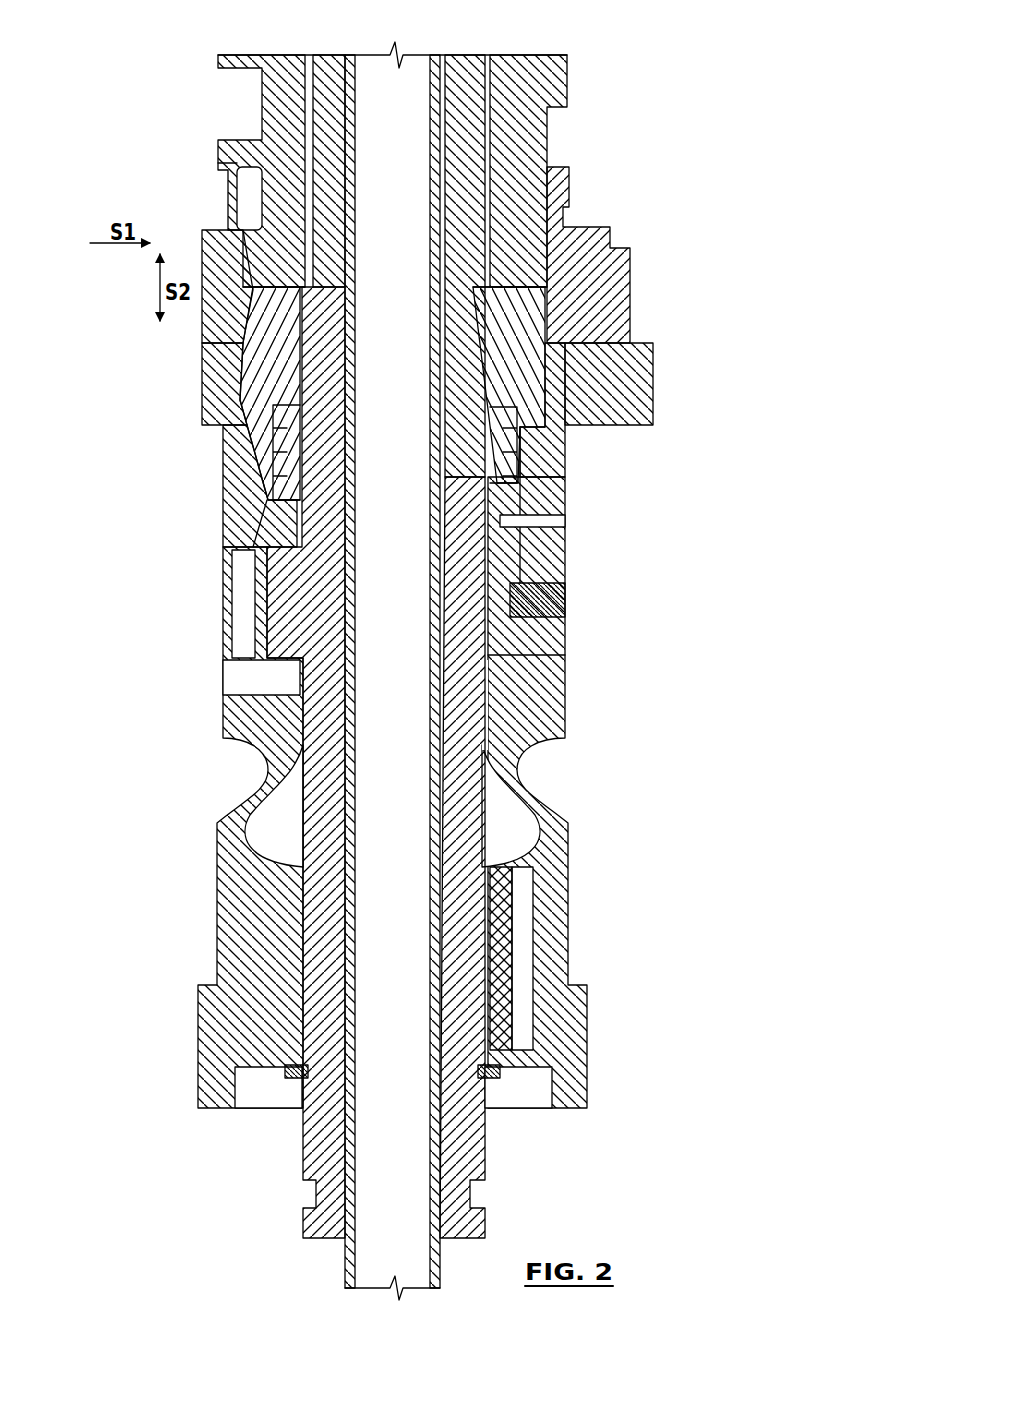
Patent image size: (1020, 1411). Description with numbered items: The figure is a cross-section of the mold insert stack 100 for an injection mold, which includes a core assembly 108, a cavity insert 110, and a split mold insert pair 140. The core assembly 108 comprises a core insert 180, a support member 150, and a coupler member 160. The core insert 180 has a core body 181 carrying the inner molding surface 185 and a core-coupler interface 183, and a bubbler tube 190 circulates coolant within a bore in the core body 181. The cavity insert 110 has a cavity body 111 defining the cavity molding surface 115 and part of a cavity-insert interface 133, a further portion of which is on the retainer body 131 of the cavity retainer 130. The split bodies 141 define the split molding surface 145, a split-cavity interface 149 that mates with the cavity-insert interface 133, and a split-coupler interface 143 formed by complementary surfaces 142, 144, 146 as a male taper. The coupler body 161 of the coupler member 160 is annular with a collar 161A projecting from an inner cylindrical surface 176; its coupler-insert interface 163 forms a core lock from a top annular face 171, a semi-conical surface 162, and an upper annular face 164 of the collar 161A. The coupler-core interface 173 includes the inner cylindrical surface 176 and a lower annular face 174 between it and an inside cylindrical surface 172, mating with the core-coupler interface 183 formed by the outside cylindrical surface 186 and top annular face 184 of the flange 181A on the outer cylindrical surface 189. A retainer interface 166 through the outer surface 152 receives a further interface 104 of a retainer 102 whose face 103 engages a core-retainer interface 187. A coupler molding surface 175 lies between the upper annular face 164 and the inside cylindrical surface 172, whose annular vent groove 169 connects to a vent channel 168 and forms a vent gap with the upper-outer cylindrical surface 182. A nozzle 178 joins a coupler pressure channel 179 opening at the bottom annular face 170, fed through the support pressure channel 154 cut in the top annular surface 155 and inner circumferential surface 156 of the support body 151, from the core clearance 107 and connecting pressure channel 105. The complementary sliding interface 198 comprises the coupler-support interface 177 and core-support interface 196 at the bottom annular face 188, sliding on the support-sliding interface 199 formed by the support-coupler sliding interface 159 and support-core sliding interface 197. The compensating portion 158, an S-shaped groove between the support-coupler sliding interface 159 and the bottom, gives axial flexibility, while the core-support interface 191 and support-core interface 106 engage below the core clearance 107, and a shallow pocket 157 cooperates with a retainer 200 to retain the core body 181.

The mold insert stack 100 is at (130, 80).
The retainer 102 is at (565, 600).
The face 103 is at (482, 599).
The further interface 104 is at (565, 633).
The connecting pressure channel 105 is at (523, 963).
The support-core interface 106 is at (200, 990).
The core clearance 107 is at (573, 870).
The core assembly 108 is at (758, 735).
The cavity insert 110 is at (620, 145).
The cavity body 111 is at (550, 73).
The cavity molding surface 115 is at (483, 160).
The cavity retainer 130 is at (677, 250).
The retainer body 131 is at (610, 230).
The cavity-insert interface 133 is at (517, 297).
The split mold insert pair 140 is at (680, 400).
The split bodies 141 is at (225, 390).
The complementary surface 142 is at (245, 480).
The split-coupler interface 143 is at (126, 452).
The complementary surface 144 is at (245, 505).
The split molding surface 145 is at (300, 413).
The complementary surface 146 is at (655, 387).
The split-cavity interface 149 is at (552, 295).
The support member 150 is at (652, 763).
The support body 151 is at (562, 740).
The outer surface 152 is at (567, 737).
The support pressure channel 154 is at (237, 692).
The top annular surface 155 is at (550, 642).
The inner circumferential surface 156 is at (290, 747).
The shallow pocket 157 is at (550, 1085).
The compensating portion 158 is at (562, 797).
The support-coupler sliding interface 159 is at (478, 655).
The coupler member 160 is at (657, 521).
The coupler body 161 is at (556, 565).
The collar 161A is at (575, 517).
The semi-conical surface 162 is at (555, 467).
The coupler-insert interface 163 is at (656, 446).
The upper annular face 164 is at (553, 492).
The retainer interface 166 is at (545, 612).
The vent channel 168 is at (558, 528).
The annular vent groove 169 is at (303, 525).
The bottom annular face 170 is at (555, 682).
The top annular face 171 is at (560, 430).
The inside cylindrical surface 172 is at (497, 522).
The coupler-core interface 173 is at (378, 547).
The lower annular face 174 is at (523, 560).
The coupler molding surface 175 is at (492, 497).
The inner cylindrical surface 176 is at (530, 590).
The coupler-support interface 177 is at (560, 700).
The nozzle 178 is at (265, 533).
The coupler pressure channel 179 is at (240, 652).
The core insert 180 is at (328, 50).
The core body 181 is at (330, 83).
The flange 181A is at (500, 622).
The upper-outer cylindrical surface 182 is at (258, 570).
The core-coupler interface 183 is at (126, 545).
The top annular face 184 is at (258, 592).
The inner molding surface 185 is at (478, 200).
The outside cylindrical surface 186 is at (268, 605).
The core-retainer interface 187 is at (558, 562).
The bottom annular face 188 is at (490, 666).
The outer cylindrical surface 189 is at (262, 745).
The bubbler tube 190 is at (413, 68).
The core-support interface 191 is at (300, 1020).
The core-support interface 196 is at (560, 722).
The support-core sliding interface 197 is at (473, 660).
The complementary sliding interface 198 is at (652, 690).
The support-sliding interface 199 is at (362, 660).
The retainer 200 is at (497, 1070).